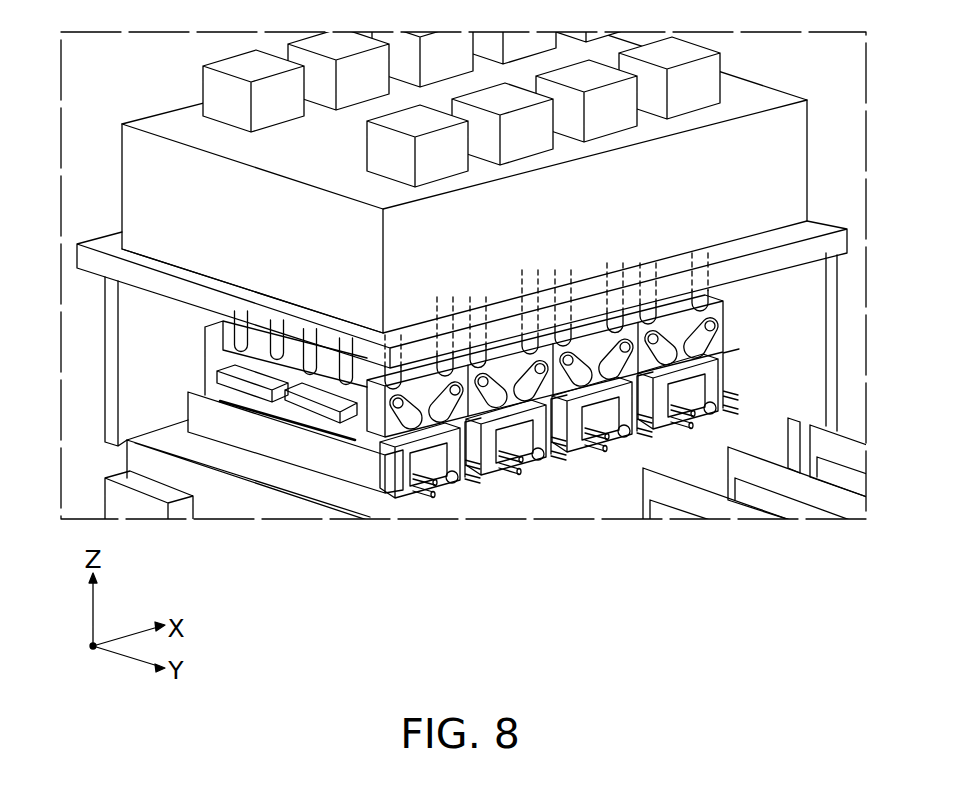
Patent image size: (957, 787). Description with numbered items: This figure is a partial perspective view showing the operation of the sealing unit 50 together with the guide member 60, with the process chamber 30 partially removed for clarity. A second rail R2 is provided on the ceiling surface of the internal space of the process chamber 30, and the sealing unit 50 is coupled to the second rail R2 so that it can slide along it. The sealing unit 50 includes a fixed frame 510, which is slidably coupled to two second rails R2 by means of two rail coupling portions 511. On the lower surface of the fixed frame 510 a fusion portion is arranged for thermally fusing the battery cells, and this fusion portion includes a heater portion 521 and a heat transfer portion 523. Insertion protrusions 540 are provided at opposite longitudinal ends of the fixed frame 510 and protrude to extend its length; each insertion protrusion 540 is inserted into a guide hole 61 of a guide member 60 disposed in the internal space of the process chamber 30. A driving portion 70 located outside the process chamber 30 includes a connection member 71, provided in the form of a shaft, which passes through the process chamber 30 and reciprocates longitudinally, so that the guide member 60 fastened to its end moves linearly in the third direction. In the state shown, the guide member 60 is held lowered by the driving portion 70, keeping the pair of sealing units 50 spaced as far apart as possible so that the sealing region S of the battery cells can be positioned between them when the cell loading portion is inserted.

The driving portion 70 is at (775, 157).
The connection member 71 is at (712, 300).
The guide member 60 is at (642, 353).
The guide hole 61 is at (723, 313).
The sealing unit 50 is at (647, 469).
The process chamber 30 is at (110, 311).
The second rail R2 is at (247, 350).
The rail coupling portion 511 is at (272, 392).
The fixed frame 510 is at (342, 445).
The heater portion 521 is at (413, 492).
The heat transfer portion 523 is at (445, 478).
The insertion protrusion 540 is at (517, 470).
The sealing region S is at (574, 512).